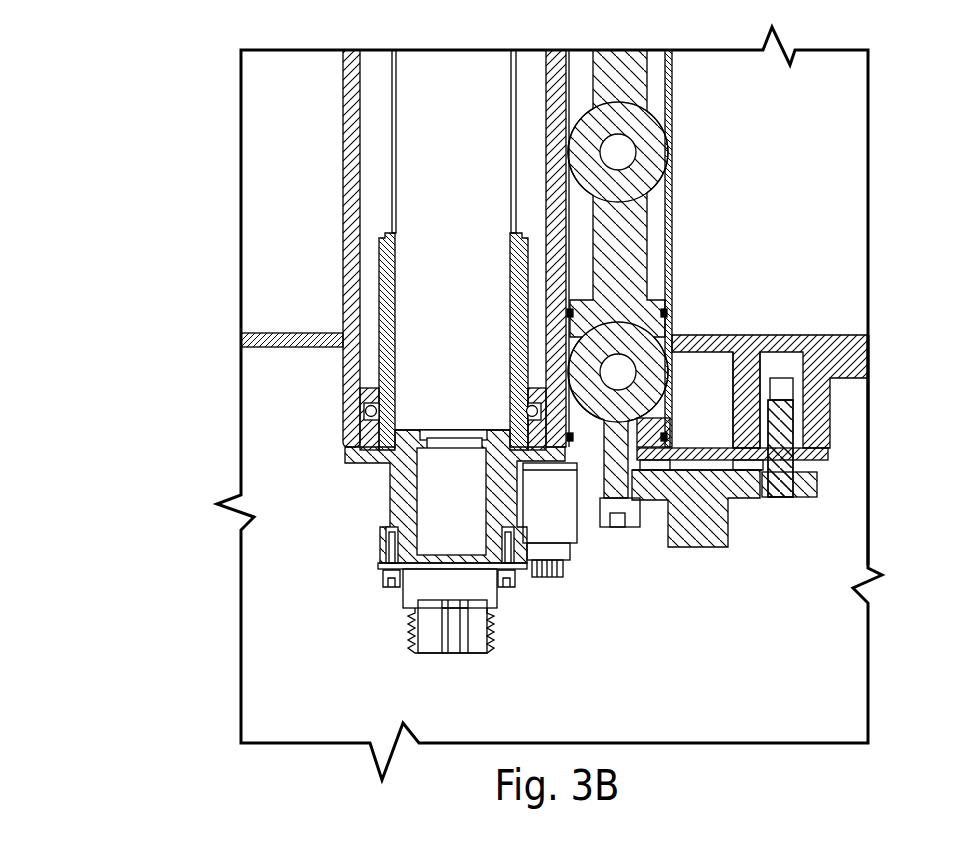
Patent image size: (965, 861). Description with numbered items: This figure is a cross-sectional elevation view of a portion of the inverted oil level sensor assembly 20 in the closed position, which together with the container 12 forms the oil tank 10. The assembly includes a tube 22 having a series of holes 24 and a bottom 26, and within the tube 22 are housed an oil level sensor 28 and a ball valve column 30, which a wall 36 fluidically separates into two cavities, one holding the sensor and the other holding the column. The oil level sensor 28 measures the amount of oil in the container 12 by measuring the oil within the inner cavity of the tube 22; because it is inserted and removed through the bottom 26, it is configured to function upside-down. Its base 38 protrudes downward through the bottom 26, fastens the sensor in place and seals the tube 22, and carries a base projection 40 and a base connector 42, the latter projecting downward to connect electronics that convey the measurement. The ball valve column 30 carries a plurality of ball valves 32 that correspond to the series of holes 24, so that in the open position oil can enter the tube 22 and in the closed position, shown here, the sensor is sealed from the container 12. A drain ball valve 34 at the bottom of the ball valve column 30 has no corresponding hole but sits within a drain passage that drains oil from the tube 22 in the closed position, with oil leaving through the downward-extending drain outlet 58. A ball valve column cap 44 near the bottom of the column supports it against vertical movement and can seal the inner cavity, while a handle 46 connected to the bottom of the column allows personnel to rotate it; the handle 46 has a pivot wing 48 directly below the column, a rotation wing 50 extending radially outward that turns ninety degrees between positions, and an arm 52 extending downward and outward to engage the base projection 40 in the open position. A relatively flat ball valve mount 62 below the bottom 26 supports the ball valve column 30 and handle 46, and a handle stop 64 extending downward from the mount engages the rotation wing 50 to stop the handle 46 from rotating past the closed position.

The oil tank 10 is at (146, 149).
The container 12 is at (812, 148).
The oil level sensor assembly 20 is at (369, 630).
The tube 22 is at (234, 248).
The series of holes 24 is at (668, 152).
The bottom 26 is at (271, 346).
The oil level sensor 28 is at (358, 408).
The ball valve column 30 is at (622, 88).
The plurality of ball valves 32 is at (617, 150).
The drain ball valve 34 is at (620, 370).
The wall 36 is at (556, 203).
The base 38 is at (359, 553).
The base projection 40 is at (553, 510).
The base connector 42 is at (475, 628).
The ball valve column cap 44 is at (603, 468).
The handle 46 is at (730, 538).
The pivot wing 48 is at (642, 485).
The rotation wing 50 is at (807, 473).
The arm 52 is at (692, 522).
The drain outlet 58 is at (821, 426).
The ball valve mount 62 is at (738, 448).
The handle stop 64 is at (823, 477).